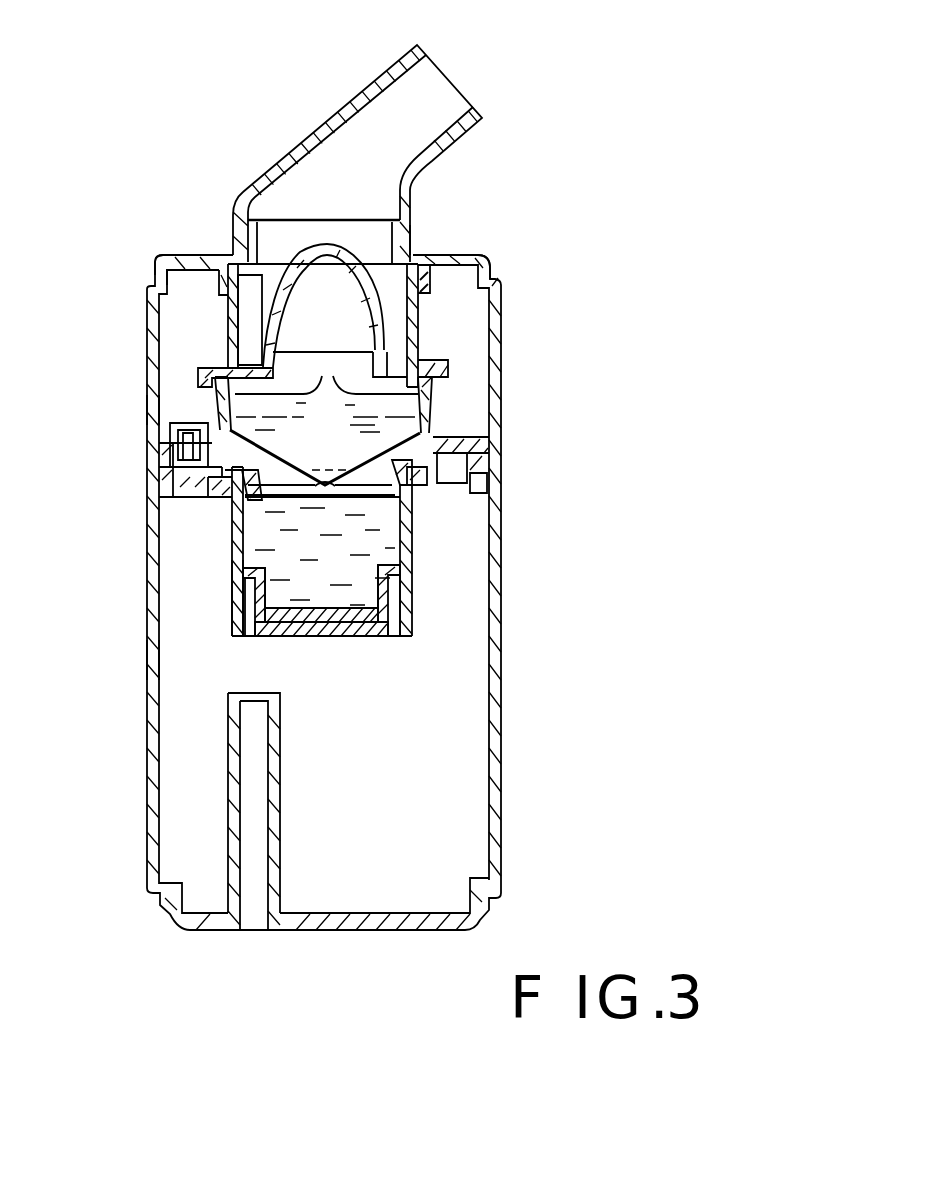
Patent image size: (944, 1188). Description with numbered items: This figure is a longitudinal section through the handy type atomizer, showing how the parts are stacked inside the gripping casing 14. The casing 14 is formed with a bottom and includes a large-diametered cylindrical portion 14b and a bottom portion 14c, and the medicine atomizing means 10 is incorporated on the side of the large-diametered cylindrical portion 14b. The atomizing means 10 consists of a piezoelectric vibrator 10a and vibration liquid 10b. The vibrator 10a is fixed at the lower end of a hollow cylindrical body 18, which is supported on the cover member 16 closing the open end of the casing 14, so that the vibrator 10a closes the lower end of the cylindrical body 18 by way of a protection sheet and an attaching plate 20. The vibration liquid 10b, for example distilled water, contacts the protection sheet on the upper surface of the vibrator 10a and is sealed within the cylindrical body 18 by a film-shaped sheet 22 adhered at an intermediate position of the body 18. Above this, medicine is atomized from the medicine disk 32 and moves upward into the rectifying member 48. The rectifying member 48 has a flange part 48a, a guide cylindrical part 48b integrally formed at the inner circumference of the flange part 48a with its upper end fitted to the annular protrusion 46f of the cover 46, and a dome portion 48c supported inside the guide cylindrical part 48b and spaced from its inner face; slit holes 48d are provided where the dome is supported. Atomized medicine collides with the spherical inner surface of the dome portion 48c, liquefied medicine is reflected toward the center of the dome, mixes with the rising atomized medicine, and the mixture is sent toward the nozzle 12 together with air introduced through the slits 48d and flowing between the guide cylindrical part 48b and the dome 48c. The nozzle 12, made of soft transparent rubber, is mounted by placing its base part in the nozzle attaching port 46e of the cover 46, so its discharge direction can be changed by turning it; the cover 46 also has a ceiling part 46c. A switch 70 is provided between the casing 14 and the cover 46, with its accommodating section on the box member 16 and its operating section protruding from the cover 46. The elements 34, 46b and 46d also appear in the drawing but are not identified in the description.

The medicine atomizing means 10 is at (357, 665).
The piezoelectric vibrator 10a is at (313, 624).
The vibration liquid 10b is at (393, 624).
The nozzle 12 is at (348, 101).
The gripping casing 14 is at (126, 768).
The large-diametered cylindrical portion 14b is at (147, 660).
The bottom portion 14c is at (330, 932).
The cover member 16 is at (470, 443).
The hollow cylindrical body 18 is at (243, 575).
The attaching plate 20 is at (280, 637).
The film-shaped sheet 22 is at (365, 500).
The medicine disk 32 is at (433, 410).
The support flange 34 is at (240, 503).
The cover 46 is at (126, 369).
The cap side wall 46b is at (145, 405).
The ceiling part 46c is at (195, 256).
The cap mouthpiece junction 46d is at (415, 238).
The nozzle attaching port 46e is at (445, 240).
The annular protrusion 46f is at (430, 280).
The rectifying member 48 is at (447, 342).
The flange part 48a is at (448, 366).
The guide cylindrical part 48b is at (420, 322).
The dome portion 48c is at (306, 262).
The slit hole 48d is at (252, 323).
The switch 70 is at (190, 465).